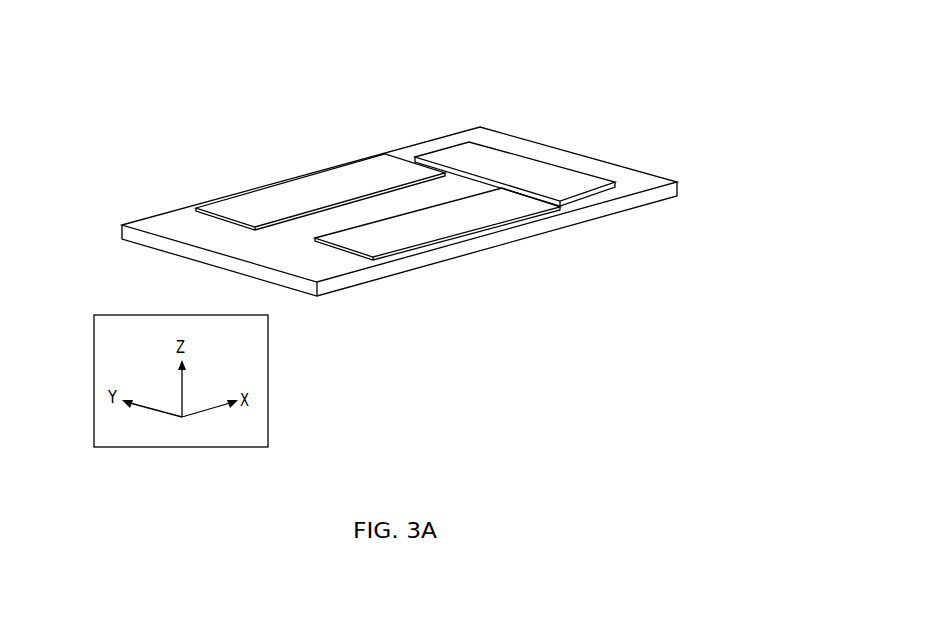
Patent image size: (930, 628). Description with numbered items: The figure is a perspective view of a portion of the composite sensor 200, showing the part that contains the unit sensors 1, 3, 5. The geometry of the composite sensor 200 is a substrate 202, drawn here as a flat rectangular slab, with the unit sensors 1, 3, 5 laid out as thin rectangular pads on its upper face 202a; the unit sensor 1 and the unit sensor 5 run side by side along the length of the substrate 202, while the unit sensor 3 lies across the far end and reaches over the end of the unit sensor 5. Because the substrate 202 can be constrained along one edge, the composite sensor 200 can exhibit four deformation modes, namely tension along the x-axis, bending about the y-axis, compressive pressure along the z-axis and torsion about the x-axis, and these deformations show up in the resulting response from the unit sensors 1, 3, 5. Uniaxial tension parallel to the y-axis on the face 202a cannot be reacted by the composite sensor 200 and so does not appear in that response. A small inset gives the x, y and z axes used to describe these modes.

The composite sensor 200 is at (414, 158).
The substrate 202 is at (163, 182).
The face 202a is at (640, 180).
The unit sensor 1 is at (310, 188).
The unit sensor 3 is at (458, 156).
The unit sensor 5 is at (473, 210).